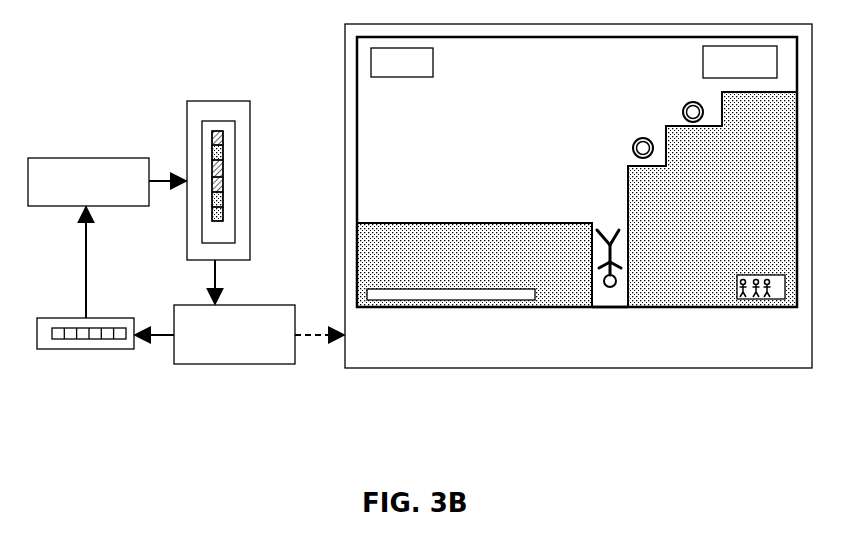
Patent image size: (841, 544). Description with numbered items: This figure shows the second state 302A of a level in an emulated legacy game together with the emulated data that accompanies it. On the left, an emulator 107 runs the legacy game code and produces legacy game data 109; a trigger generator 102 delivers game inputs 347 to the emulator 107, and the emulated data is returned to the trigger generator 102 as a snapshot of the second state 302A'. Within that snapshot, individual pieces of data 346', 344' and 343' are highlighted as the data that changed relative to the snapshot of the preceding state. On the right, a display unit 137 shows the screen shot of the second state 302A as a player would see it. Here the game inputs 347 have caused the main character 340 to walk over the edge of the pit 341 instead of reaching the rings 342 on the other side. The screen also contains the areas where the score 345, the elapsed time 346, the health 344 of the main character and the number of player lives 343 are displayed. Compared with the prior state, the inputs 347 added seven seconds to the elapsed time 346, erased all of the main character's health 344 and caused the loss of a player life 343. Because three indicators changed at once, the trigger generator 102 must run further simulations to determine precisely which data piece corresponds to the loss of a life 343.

The emulator 107 is at (85, 156).
The legacy game data 109 is at (240, 102).
The snapshot of the second state 302A' is at (218, 136).
The data piece 346' is at (256, 134).
The data piece 344' is at (256, 170).
The data piece 343' is at (256, 192).
The trigger generator 102 is at (252, 303).
The game inputs 347 is at (82, 352).
The display unit 137 is at (437, 370).
The second state 302A is at (577, 198).
The elapsed time 346 is at (423, 73).
The score 345 is at (702, 72).
The rings 342 is at (633, 152).
The main character 340 is at (615, 230).
The pit 341 is at (607, 298).
The health 344 is at (451, 318).
The player lives 343 is at (731, 316).